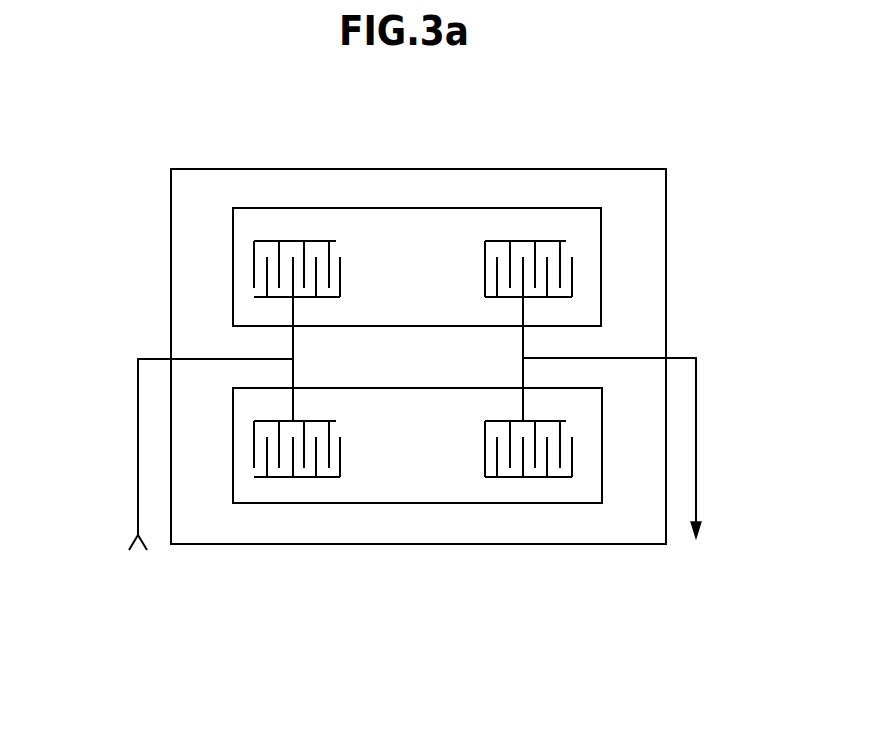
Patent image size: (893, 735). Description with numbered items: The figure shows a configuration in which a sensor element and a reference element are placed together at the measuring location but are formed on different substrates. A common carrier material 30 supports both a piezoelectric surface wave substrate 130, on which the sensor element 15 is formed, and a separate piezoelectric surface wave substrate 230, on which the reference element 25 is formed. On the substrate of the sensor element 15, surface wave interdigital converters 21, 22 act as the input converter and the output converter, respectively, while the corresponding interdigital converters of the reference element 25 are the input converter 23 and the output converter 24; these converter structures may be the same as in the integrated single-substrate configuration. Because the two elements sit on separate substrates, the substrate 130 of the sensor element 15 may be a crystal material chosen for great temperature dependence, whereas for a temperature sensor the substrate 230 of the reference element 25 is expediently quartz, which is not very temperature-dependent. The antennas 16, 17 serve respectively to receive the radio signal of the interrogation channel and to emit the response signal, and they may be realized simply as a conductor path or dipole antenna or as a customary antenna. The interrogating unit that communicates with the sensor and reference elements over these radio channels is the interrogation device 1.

The interrogation device 1 is at (378, 569).
The sensor element 15 is at (413, 278).
The antenna 16 is at (138, 485).
The antenna 17 is at (697, 495).
The input interdigital converter 21 is at (340, 270).
The output interdigital converter 22 is at (485, 258).
The input interdigital converter 23 is at (340, 455).
The output interdigital converter 24 is at (485, 447).
The reference element 25 is at (413, 455).
The carrier material 30 is at (655, 213).
The piezoelectric surface wave substrate 130 is at (590, 300).
The piezoelectric surface wave substrate 230 is at (591, 473).